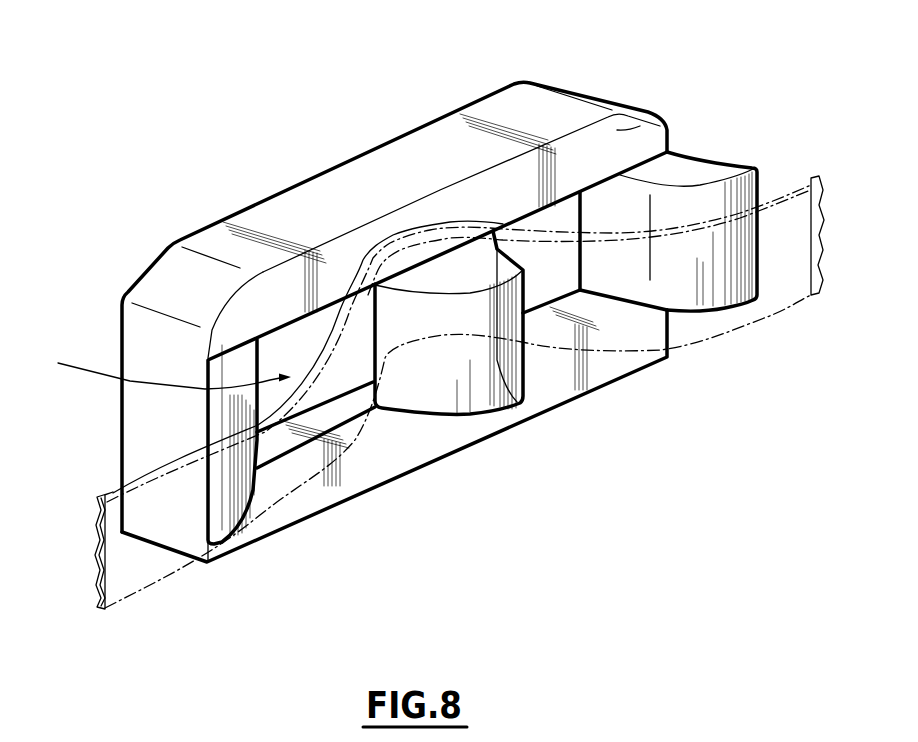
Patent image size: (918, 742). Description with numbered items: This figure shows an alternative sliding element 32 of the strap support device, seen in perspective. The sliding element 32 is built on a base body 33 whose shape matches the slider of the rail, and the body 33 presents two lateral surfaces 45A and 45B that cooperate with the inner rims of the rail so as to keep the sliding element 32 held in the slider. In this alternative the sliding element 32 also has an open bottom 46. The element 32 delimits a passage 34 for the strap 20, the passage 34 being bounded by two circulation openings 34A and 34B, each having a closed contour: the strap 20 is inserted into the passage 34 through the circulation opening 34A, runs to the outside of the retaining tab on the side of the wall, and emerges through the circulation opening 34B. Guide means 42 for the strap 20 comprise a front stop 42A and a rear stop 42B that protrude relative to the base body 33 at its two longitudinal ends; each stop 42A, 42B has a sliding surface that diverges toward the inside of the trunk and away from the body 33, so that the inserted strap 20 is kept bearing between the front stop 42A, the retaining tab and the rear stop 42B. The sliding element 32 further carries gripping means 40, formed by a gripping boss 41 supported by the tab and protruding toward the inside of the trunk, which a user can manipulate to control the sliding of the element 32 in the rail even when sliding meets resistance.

The strap 20 is at (273, 498).
The sliding element 32 is at (352, 98).
The base body 33 is at (150, 421).
The passage 34 is at (320, 320).
The circulation opening 34A is at (272, 354).
The circulation opening 34B is at (552, 213).
The gripping means 40 is at (505, 405).
The gripping boss 41 is at (438, 400).
The guide means 42 is at (693, 170).
The front stop 42A is at (723, 297).
The rear stop 42B is at (237, 497).
The lateral surface 45A is at (560, 380).
The lateral surface 45B is at (643, 124).
The open bottom 46 is at (162, 366).